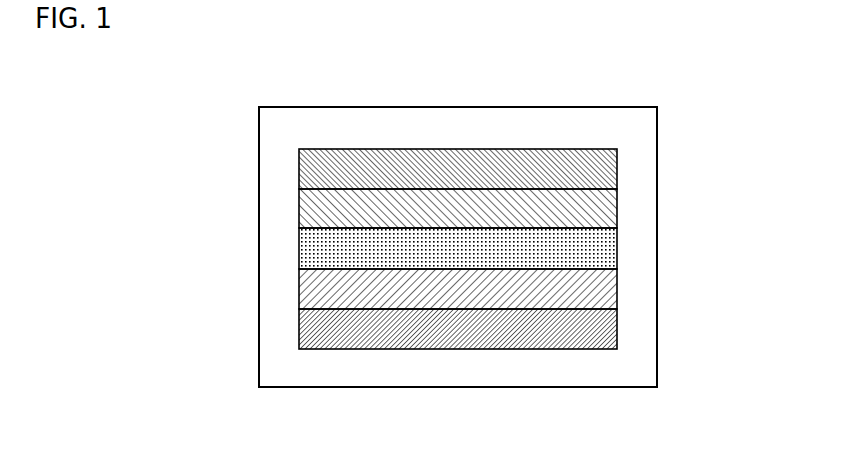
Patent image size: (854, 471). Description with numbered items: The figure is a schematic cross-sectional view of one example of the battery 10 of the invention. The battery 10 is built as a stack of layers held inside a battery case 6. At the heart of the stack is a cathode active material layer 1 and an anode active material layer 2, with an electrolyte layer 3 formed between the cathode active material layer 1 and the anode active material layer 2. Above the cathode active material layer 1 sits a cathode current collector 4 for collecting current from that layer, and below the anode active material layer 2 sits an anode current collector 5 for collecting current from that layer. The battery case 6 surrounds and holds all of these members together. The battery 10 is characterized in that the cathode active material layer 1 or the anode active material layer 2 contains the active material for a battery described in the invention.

The battery 10 is at (640, 80).
The battery case 6 is at (630, 135).
The cathode current collector 4 is at (592, 173).
The cathode active material layer 1 is at (590, 212).
The electrolyte layer 3 is at (590, 254).
The anode active material layer 2 is at (590, 292).
The anode current collector 5 is at (590, 333).